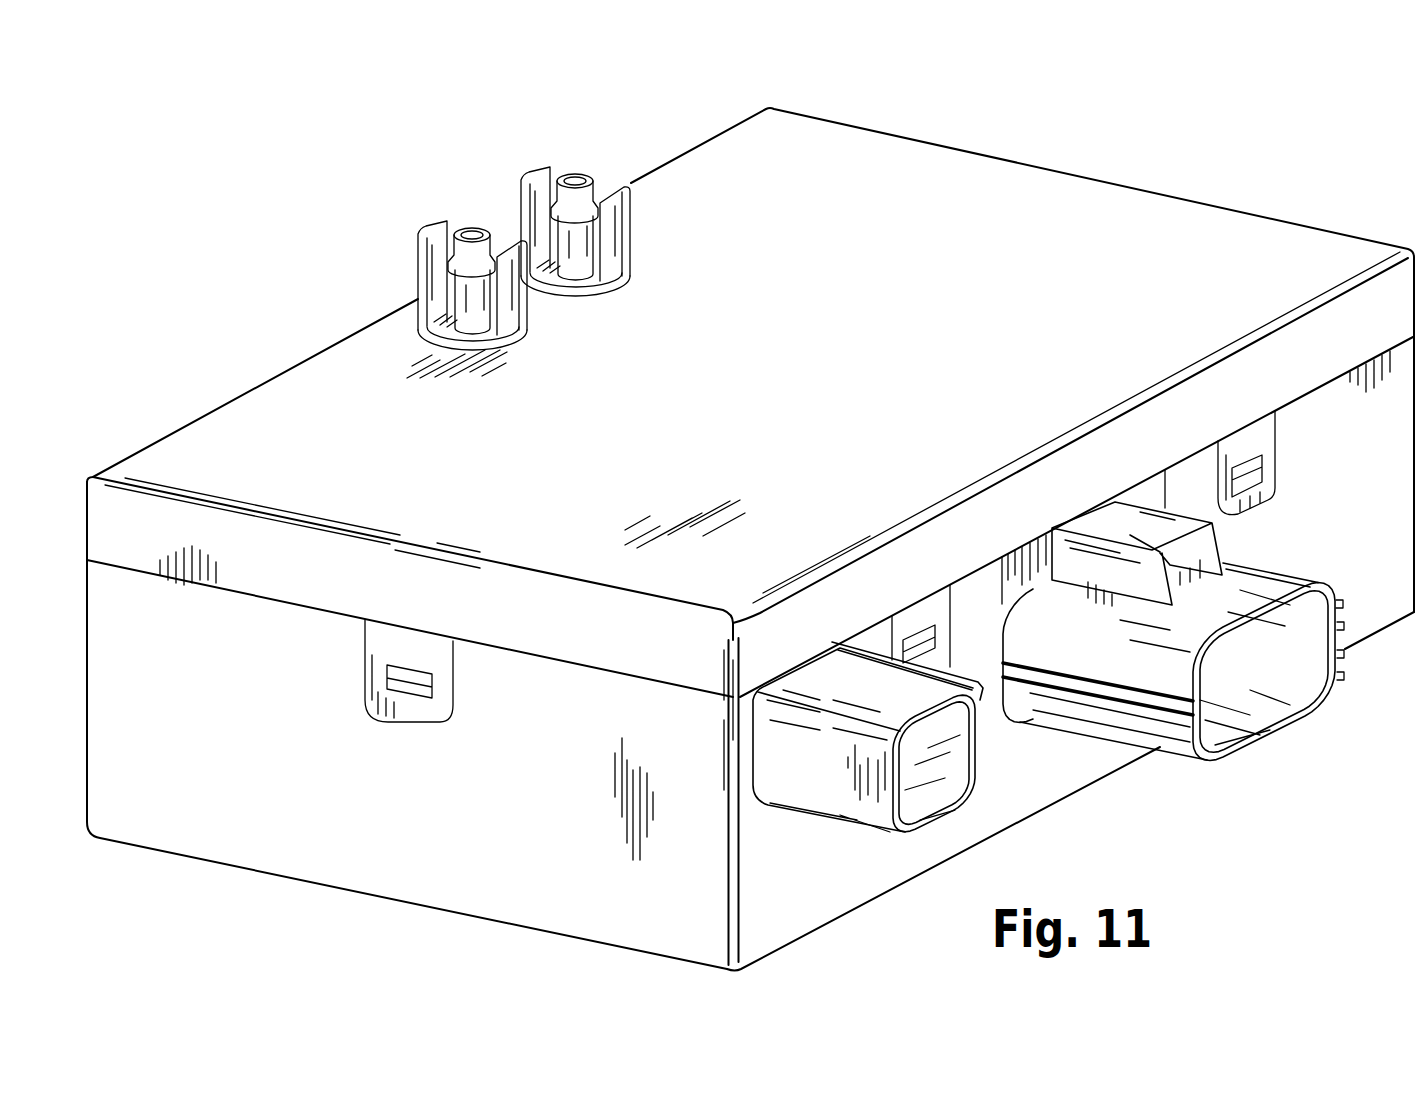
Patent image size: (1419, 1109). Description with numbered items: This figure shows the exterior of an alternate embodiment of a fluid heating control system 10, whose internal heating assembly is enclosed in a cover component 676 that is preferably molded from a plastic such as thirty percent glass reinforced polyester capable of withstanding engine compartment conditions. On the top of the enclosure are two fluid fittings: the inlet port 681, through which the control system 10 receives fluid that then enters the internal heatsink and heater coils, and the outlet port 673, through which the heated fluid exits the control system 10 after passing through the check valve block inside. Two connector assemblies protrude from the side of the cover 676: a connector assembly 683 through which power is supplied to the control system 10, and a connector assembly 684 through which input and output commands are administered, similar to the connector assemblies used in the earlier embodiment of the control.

The control system 10 is at (1178, 142).
The outlet port 673 is at (470, 291).
The inlet port 681 is at (582, 193).
The cover component 676 is at (377, 863).
The connector assembly 683 is at (1228, 680).
The connector assembly 684 is at (922, 763).